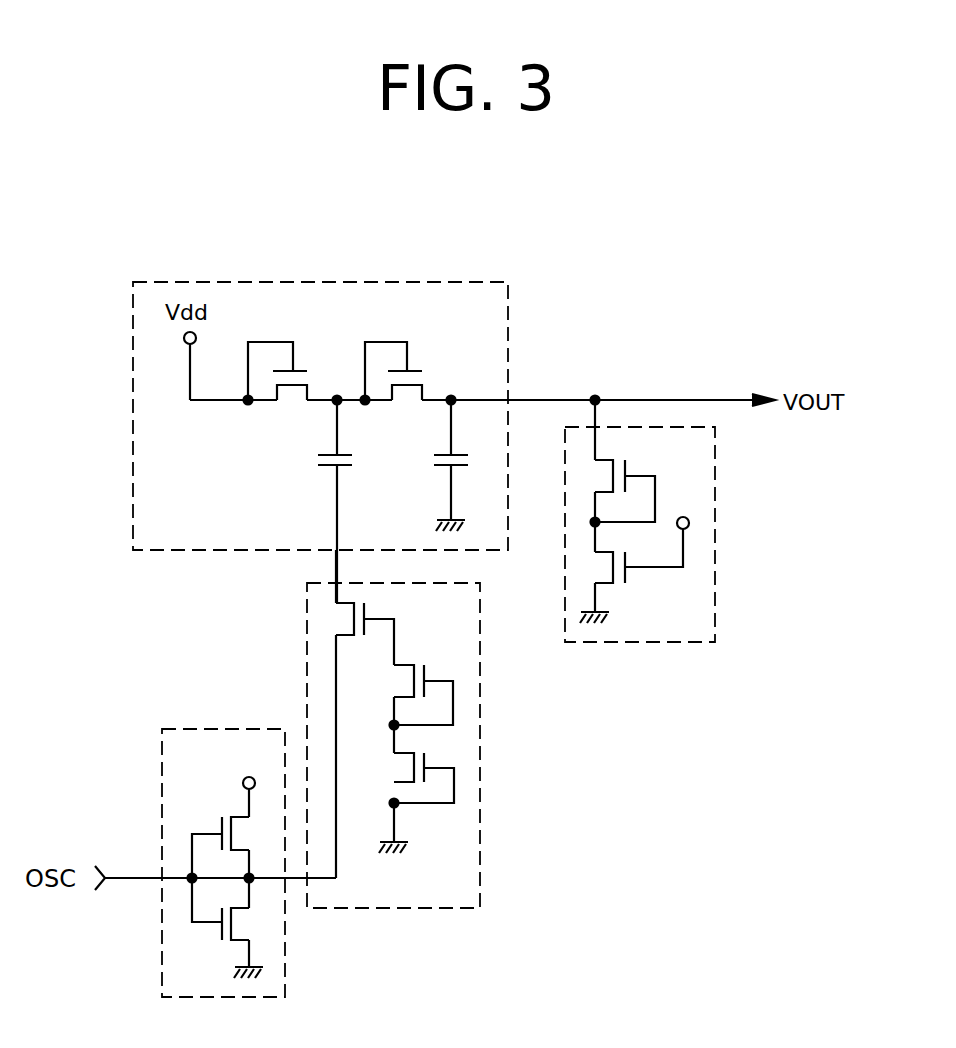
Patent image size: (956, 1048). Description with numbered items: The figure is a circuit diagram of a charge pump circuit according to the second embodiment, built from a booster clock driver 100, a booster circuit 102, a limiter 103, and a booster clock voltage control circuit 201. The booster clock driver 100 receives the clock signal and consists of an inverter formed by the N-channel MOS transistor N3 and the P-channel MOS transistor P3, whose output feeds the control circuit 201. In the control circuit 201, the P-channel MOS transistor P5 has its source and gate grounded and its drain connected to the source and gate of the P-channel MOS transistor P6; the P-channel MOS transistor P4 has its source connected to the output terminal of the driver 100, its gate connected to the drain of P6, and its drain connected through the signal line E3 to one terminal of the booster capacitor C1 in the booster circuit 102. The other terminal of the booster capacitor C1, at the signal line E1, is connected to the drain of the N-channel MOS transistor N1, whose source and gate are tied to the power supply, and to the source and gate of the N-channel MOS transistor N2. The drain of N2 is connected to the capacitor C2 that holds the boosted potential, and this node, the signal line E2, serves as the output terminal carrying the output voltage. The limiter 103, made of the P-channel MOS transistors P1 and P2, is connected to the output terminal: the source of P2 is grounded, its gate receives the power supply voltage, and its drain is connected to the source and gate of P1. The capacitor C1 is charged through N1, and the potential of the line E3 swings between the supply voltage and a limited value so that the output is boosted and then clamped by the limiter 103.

The booster clock driver 100 is at (285, 967).
The booster circuit 102 is at (170, 553).
The limiter 103 is at (715, 607).
The booster clock voltage control circuit 201 is at (480, 852).
The signal line E1 is at (335, 389).
The signal line E2 is at (545, 397).
The signal line E3 is at (336, 566).
The N-channel MOS transistor N1 is at (276, 386).
The N-channel MOS transistor N2 is at (392, 386).
The N-channel MOS transistor N3 is at (246, 943).
The booster capacitor C1 is at (348, 529).
The capacitor C2 is at (463, 464).
The P-channel MOS transistor P1 is at (611, 493).
The P-channel MOS transistor P2 is at (633, 557).
The P-channel MOS transistor P3 is at (230, 836).
The P-channel MOS transistor P4 is at (351, 740).
The P-channel MOS transistor P5 is at (408, 803).
The P-channel MOS transistor P6 is at (407, 709).